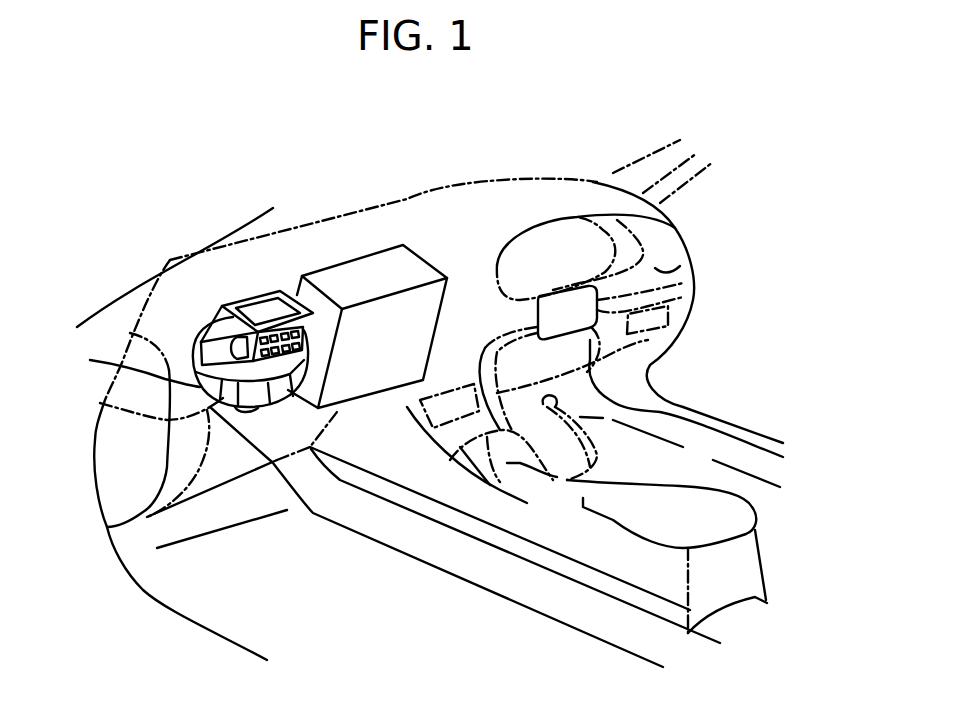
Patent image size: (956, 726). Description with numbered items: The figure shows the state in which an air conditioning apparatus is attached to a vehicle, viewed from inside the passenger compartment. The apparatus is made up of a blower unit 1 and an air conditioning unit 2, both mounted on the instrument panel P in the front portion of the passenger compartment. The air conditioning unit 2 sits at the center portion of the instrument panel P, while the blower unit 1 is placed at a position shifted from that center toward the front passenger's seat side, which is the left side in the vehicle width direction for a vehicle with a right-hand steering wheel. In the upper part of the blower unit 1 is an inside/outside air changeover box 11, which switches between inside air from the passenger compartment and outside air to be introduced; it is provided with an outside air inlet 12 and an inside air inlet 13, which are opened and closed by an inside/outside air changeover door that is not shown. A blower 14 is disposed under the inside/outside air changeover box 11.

The blower unit 1 is at (207, 272).
The inside/outside air changeover box 11 is at (256, 298).
The outside air inlet 12 is at (252, 294).
The inside air inlet 13 is at (90, 360).
The blower 14 is at (197, 333).
The air conditioning unit 2 is at (360, 273).
The instrument panel P is at (688, 258).